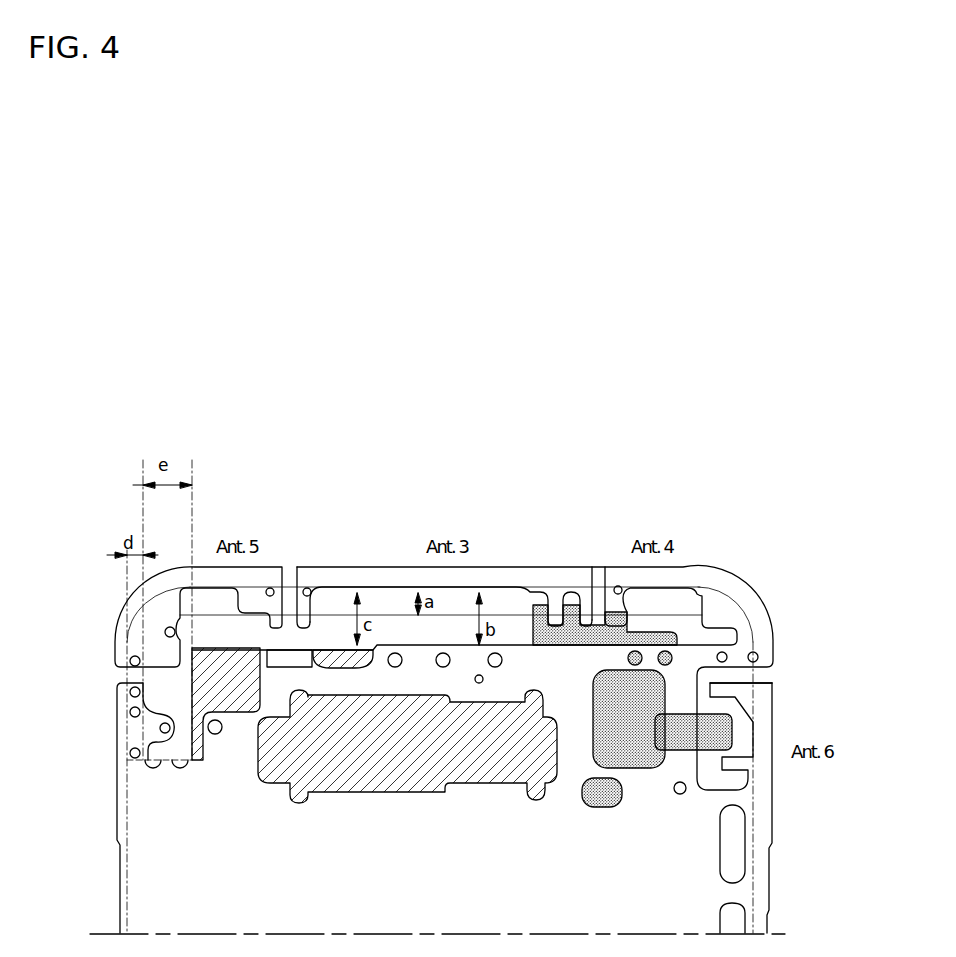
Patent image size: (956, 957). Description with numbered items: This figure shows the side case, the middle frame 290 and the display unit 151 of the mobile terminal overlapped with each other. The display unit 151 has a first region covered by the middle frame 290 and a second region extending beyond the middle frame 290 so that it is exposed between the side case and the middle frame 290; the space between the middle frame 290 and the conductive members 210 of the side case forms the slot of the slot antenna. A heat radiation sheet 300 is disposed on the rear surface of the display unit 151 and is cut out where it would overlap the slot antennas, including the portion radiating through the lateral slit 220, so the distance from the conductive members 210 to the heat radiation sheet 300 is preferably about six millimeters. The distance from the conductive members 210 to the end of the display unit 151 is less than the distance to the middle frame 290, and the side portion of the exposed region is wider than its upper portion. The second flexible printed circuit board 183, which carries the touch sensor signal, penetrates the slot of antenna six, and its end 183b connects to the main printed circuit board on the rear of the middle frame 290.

The conductive members 210 is at (177, 578).
The slit 220 is at (288, 578).
The display unit 151 is at (143, 688).
The heat radiation sheet 300 is at (217, 672).
The second flexible printed circuit board 183 is at (653, 697).
The end of the second flexible printed circuit board 183b is at (660, 730).
The middle frame 290 is at (647, 888).